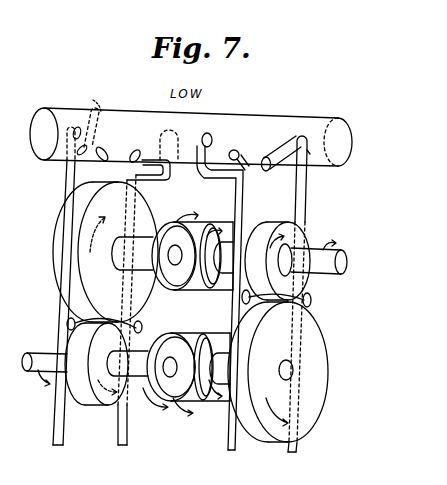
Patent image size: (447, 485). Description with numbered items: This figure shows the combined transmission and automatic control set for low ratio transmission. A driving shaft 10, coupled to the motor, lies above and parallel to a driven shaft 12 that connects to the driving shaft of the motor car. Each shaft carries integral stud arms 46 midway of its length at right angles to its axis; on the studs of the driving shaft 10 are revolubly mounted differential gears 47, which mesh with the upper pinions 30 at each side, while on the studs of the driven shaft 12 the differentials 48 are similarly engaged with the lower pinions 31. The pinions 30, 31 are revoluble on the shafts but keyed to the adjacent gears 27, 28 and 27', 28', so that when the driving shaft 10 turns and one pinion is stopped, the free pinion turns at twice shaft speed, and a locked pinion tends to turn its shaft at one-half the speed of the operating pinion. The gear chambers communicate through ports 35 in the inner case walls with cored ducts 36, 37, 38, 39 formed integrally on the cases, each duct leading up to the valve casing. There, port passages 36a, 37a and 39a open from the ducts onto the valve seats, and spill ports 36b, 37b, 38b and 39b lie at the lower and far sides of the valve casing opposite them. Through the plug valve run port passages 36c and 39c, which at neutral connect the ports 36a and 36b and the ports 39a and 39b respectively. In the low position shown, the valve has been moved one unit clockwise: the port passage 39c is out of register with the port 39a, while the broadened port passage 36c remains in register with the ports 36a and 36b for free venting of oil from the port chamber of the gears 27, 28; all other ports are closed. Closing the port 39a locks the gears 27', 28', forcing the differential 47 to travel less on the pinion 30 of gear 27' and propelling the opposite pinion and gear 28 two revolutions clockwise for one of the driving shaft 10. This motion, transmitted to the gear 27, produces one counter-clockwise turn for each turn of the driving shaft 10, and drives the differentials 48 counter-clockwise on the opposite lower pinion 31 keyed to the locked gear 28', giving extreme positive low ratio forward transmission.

The driving shaft 10 is at (343, 251).
The driven shaft 12 is at (40, 356).
The gear 27 is at (278, 372).
The gear 27' is at (105, 252).
The gear 28 is at (291, 261).
The gear 28' is at (106, 377).
The upper pinion 30 is at (218, 288).
The lower pinion 31 is at (221, 402).
The port 35 is at (67, 320).
The cored duct 36 is at (306, 208).
The port passage 36a is at (310, 154).
The spill port 36b is at (268, 157).
The port passage 36c is at (298, 137).
The cored duct 37 is at (237, 200).
The port passage 37a is at (219, 128).
The spill port 37b is at (247, 171).
The cored duct 38 is at (157, 181).
The spill port 38b is at (157, 127).
The cored duct 39 is at (66, 182).
The port passage 39a is at (77, 127).
The spill port 39b is at (105, 147).
The port passage 39c is at (93, 100).
The stud arm 46 is at (180, 263).
The differential gear 47 is at (175, 287).
The differential 48 is at (178, 354).